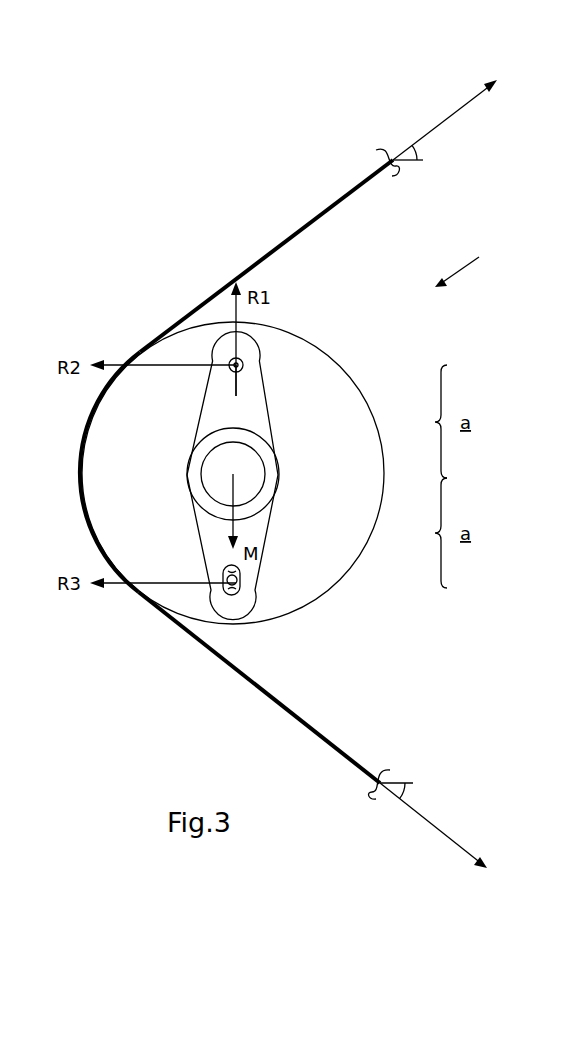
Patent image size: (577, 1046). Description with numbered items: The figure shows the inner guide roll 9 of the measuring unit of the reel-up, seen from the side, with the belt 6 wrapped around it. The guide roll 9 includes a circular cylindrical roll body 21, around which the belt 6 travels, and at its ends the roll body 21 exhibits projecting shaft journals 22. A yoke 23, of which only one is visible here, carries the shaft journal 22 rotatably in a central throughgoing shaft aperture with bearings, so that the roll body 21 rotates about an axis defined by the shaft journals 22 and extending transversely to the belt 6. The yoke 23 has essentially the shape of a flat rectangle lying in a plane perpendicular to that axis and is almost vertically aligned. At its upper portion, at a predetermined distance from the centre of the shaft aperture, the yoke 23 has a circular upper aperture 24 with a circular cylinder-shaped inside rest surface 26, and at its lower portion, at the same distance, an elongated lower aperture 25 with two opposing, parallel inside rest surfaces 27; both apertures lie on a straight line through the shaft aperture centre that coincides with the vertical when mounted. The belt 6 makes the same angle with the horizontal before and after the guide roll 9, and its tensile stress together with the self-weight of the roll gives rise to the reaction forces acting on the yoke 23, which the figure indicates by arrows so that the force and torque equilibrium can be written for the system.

The belt 6 is at (338, 208).
The inner guide roll 9 is at (465, 261).
The roll body 21 is at (342, 577).
The shaft journal 22 is at (249, 475).
The yoke 23 is at (205, 412).
The upper aperture 24 is at (230, 361).
The lower aperture 25 is at (240, 590).
The inside rest surface 26 is at (234, 392).
The inside rest surfaces 27 is at (241, 570).